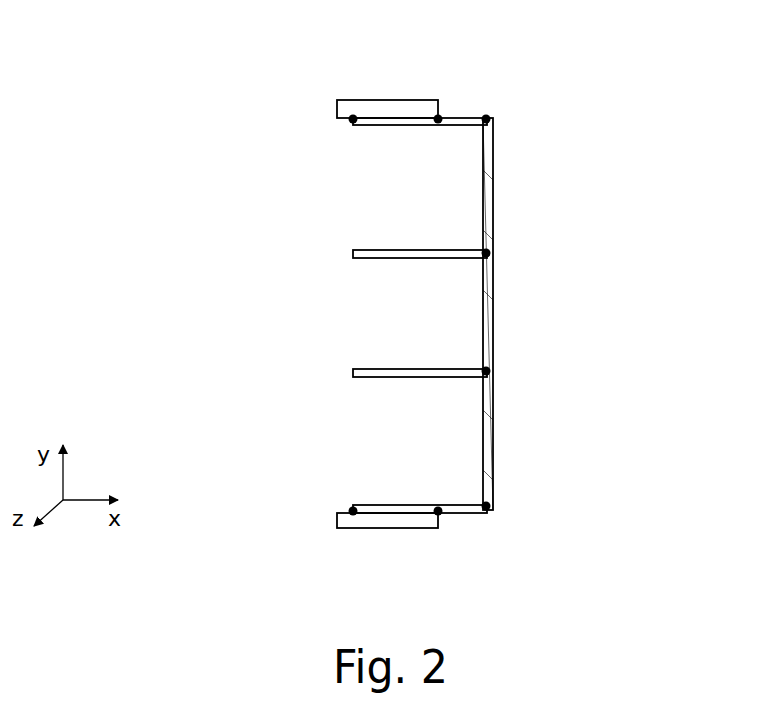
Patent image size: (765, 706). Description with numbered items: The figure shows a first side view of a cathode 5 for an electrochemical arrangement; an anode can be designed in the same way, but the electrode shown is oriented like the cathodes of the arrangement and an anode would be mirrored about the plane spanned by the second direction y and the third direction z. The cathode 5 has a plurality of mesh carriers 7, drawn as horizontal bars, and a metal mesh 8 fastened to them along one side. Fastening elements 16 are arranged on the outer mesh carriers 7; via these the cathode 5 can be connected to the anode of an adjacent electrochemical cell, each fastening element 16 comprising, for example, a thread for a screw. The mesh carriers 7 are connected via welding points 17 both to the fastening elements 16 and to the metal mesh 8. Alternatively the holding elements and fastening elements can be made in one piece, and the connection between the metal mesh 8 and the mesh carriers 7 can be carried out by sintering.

The cathode 5 is at (632, 84).
The mesh carrier 7 is at (403, 125).
The metal mesh 8 is at (494, 430).
The fastening element 16 is at (390, 100).
The welding point 17 is at (440, 118).